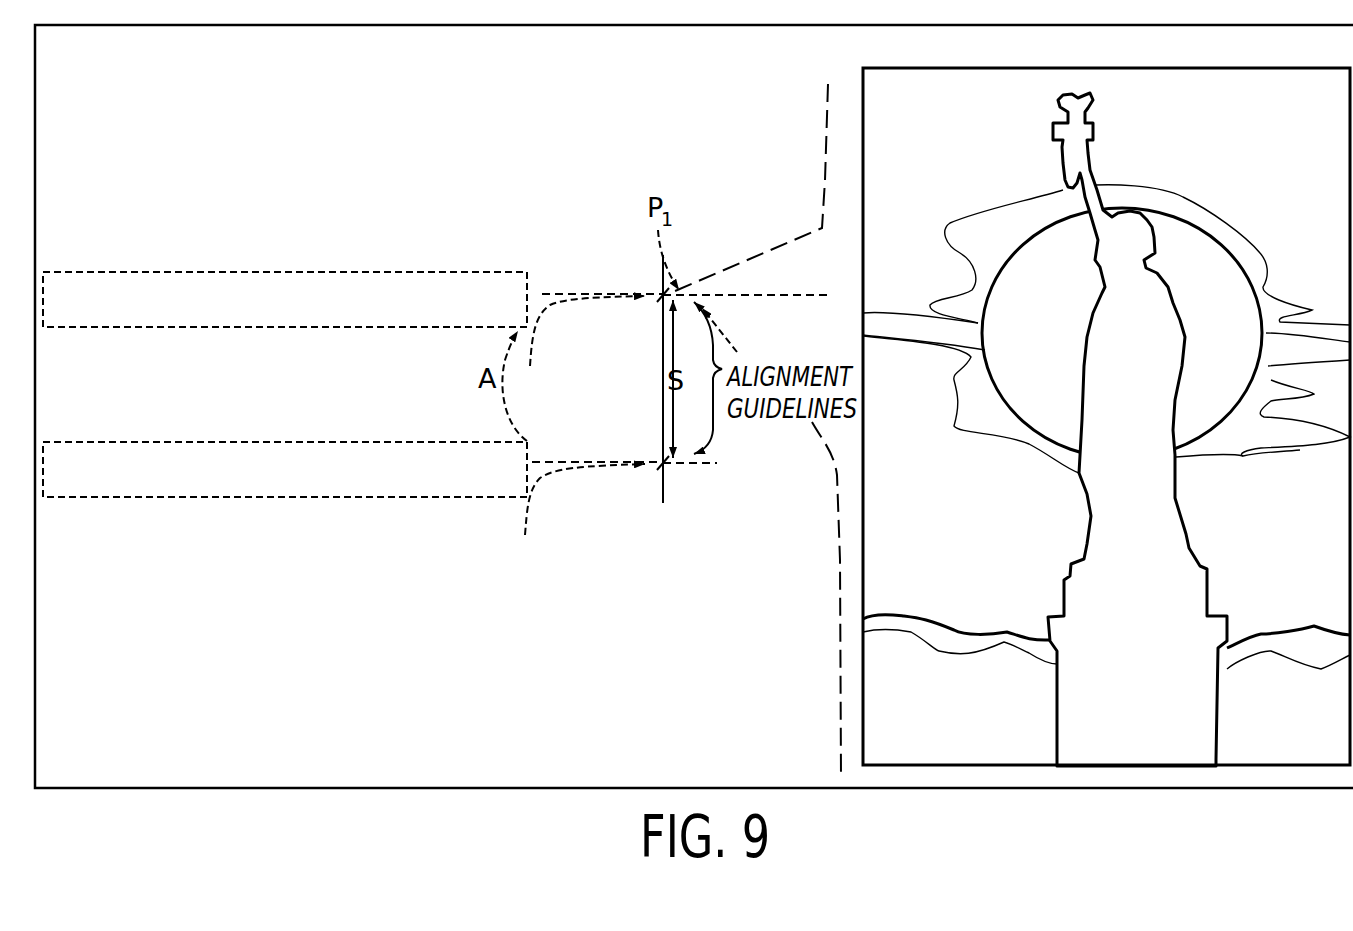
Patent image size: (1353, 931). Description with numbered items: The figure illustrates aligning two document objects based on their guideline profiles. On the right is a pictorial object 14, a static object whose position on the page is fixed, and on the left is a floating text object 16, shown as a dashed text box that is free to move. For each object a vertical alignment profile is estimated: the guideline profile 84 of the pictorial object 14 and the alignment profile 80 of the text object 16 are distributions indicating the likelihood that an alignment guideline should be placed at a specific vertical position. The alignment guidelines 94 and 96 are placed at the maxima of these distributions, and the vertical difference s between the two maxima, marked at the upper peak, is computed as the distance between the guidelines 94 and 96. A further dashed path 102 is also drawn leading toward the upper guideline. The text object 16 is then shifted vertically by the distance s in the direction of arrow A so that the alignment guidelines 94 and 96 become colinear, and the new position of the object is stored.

The pictorial object 14 is at (862, 87).
The text object 16 is at (317, 498).
The alignment profile 80 is at (577, 473).
The guideline profile 84 is at (768, 245).
The alignment guideline 94 is at (813, 291).
The alignment guideline 96 is at (693, 468).
The alignment path 102 is at (574, 292).